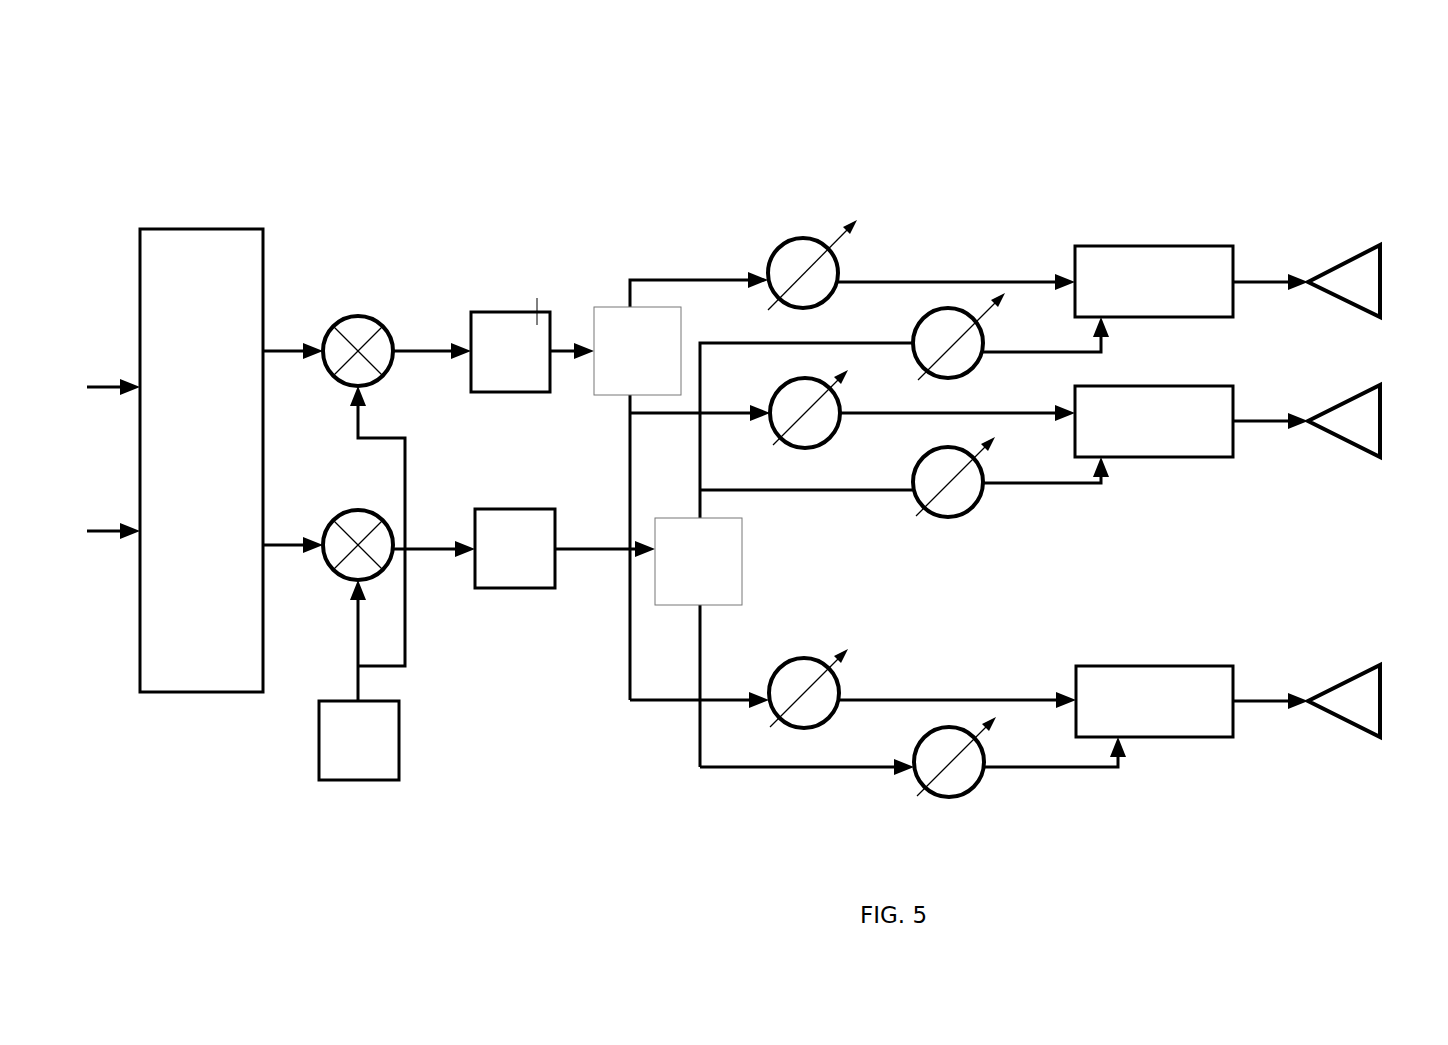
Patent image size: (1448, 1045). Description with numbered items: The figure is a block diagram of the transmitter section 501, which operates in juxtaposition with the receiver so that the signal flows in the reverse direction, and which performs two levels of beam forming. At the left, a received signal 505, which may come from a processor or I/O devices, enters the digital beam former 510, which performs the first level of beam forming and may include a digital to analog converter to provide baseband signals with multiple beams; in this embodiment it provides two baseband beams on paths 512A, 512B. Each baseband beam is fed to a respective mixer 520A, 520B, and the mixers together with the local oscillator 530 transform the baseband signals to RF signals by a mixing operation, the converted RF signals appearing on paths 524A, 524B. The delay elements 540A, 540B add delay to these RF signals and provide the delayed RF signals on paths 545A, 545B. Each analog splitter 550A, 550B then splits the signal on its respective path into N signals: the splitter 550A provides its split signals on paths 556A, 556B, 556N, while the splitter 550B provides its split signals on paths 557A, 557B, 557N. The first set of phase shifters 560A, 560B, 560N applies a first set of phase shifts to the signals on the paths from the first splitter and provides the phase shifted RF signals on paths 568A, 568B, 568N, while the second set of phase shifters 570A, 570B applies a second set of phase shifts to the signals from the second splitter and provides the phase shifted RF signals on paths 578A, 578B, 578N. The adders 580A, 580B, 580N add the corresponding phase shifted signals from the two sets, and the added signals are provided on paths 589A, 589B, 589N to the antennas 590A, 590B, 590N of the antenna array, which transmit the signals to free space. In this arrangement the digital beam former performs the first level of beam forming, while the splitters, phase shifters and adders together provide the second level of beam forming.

The transmitter section 501 is at (937, 132).
The received signal 505 is at (120, 378).
The digital beam former 510 is at (201, 460).
The path 512A is at (307, 357).
The path 512B is at (307, 552).
The mixer 520A is at (364, 316).
The mixer 520B is at (331, 511).
The path 524A is at (452, 357).
The path 524B is at (452, 552).
The local oscillator 530 is at (362, 583).
The delay element 540A is at (510, 345).
The delay element 540B is at (515, 548).
The path 545A is at (573, 338).
The path 545B is at (597, 546).
The analog splitter 550A is at (637, 351).
The analog splitter 550B is at (698, 561).
The path 556A is at (683, 278).
The path 556B is at (667, 418).
The path 556N is at (648, 706).
The path 557A is at (737, 348).
The path 557B is at (805, 497).
The path 557N is at (762, 773).
The first set phase shifter 560A is at (788, 310).
The first set phase shifter 560B is at (803, 448).
The first set phase shifter 560N is at (805, 730).
The path 568A is at (956, 282).
The path 568B is at (957, 412).
The path 568N is at (957, 700).
The second set phase shifter 570A is at (948, 379).
The second set phase shifter 570B is at (945, 518).
The path 578A is at (1046, 334).
The path 578B is at (1046, 469).
The path 578N is at (1055, 752).
The adder 580A is at (1154, 281).
The adder 580B is at (1154, 421).
The adder 580N is at (1154, 701).
The path 589A is at (1292, 272).
The path 589B is at (1282, 416).
The path 589N is at (1282, 697).
The antenna 590A is at (1381, 282).
The antenna 590B is at (1381, 421).
The antenna 590N is at (1381, 702).